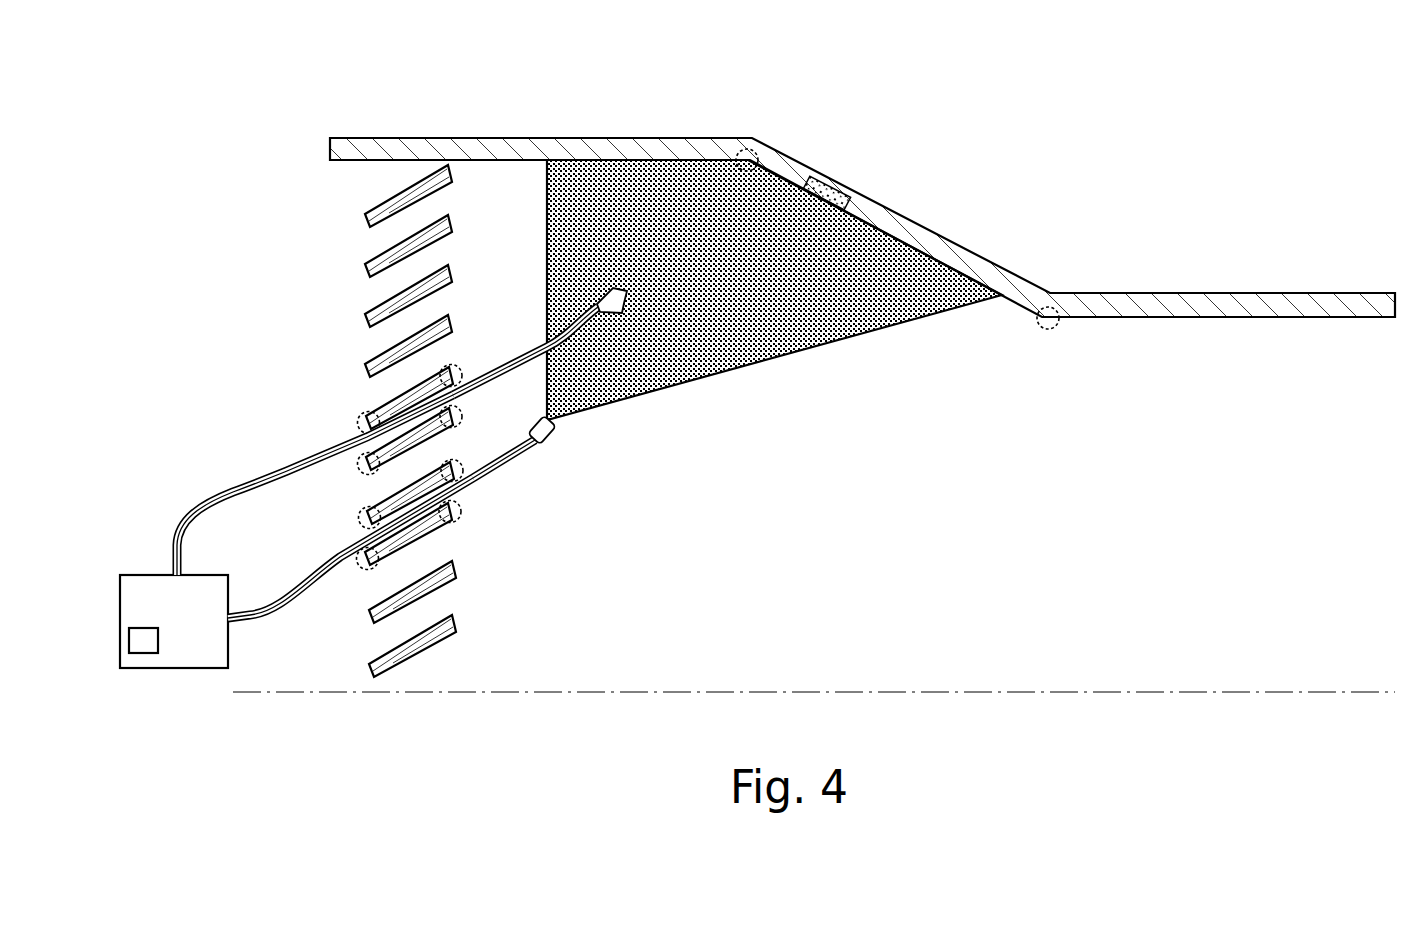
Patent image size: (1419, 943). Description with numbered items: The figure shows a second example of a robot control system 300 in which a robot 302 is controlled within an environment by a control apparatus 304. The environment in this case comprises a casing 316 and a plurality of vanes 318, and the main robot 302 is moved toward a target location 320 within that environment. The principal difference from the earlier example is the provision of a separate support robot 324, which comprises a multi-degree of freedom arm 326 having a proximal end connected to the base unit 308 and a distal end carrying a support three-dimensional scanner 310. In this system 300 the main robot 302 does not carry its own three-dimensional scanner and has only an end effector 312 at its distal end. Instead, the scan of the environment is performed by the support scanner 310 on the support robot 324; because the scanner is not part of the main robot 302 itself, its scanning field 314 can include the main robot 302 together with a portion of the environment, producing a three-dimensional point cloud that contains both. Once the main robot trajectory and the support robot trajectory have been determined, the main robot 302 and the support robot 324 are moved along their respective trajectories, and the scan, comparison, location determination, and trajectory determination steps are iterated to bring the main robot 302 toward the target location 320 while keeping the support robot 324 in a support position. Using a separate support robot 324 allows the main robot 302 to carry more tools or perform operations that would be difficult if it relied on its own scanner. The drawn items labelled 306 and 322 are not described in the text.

The robot control system 300 is at (151, 574).
The robot 302 is at (287, 472).
The control apparatus 304 is at (140, 668).
The cable section 306 is at (530, 350).
The base unit 308 is at (210, 668).
The support 3D scanner 310 is at (557, 433).
The end effector 312 is at (627, 299).
The scanning field 314 is at (840, 322).
The casing 316 is at (657, 138).
The vanes 318 is at (370, 253).
The target location 320 is at (830, 183).
The pivot 322 is at (466, 413).
The support robot 324 is at (322, 572).
The multi-degree of freedom arm 326 is at (495, 478).